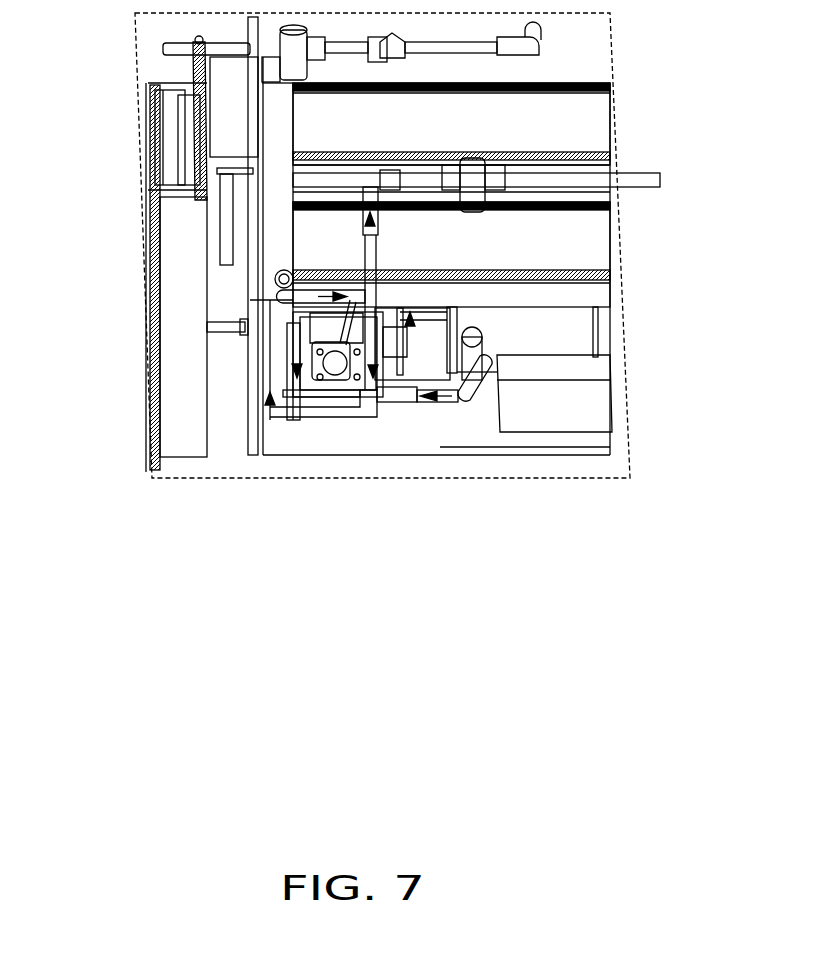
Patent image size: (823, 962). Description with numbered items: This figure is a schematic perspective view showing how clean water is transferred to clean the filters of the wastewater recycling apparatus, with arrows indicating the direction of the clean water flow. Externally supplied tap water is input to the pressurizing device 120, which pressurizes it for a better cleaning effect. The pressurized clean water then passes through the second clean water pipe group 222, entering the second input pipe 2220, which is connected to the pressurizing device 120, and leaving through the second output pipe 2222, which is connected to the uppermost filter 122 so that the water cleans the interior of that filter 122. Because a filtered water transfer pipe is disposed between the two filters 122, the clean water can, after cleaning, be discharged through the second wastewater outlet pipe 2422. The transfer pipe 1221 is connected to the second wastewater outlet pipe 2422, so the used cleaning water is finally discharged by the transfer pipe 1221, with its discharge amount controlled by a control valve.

The pressurizing device 120 is at (577, 333).
The filter 122 is at (590, 108).
The second clean water pipe group 222 is at (323, 460).
The second input pipe 2220 is at (300, 345).
The second output pipe 2222 is at (267, 348).
The transfer pipe 1221 is at (403, 398).
The second wastewater outlet pipe 2422 is at (277, 291).